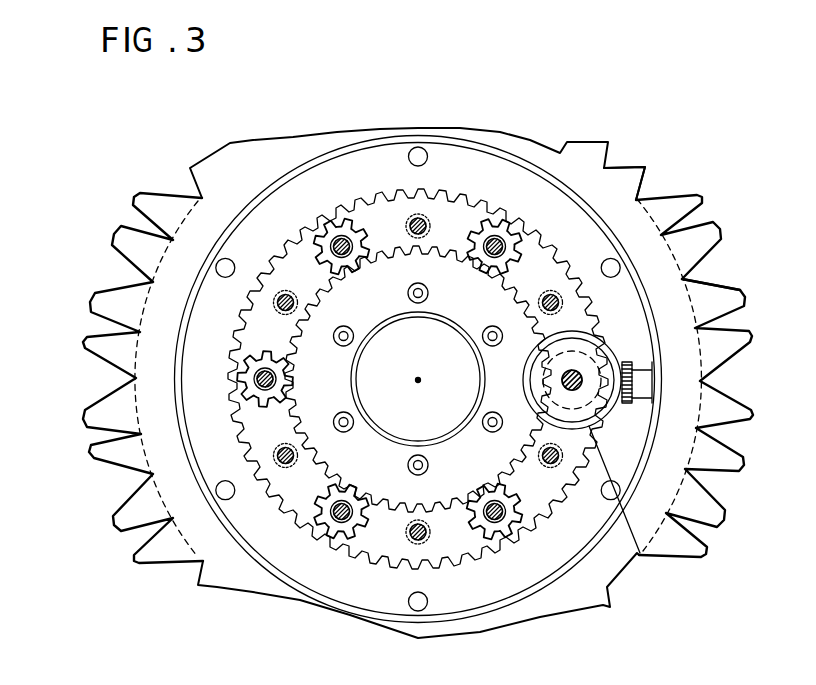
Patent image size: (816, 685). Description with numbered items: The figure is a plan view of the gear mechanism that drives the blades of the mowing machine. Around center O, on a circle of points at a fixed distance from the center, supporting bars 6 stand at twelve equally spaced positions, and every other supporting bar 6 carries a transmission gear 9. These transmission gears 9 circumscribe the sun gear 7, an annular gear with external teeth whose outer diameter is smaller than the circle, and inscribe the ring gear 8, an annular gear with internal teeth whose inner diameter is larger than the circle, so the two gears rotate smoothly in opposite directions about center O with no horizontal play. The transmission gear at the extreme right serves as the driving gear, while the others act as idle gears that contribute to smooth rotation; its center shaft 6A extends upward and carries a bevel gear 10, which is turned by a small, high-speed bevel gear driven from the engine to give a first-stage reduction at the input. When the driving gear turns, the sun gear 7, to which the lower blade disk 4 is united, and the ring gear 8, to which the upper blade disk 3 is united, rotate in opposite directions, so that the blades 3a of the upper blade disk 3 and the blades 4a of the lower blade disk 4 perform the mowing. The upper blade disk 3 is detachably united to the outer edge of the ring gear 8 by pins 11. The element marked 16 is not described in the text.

The upper blade disk 3 is at (621, 195).
The blades of upper blade disk 3a is at (707, 220).
The lower blade disk 4 is at (603, 138).
The blades of lower blade disk 4a is at (690, 192).
The supporting bars 6 is at (412, 220).
The center shaft 6A is at (583, 388).
The sun gear 7 is at (387, 309).
The ring gear 8 is at (205, 380).
The transmission gears 9 is at (490, 235).
The bevel gear 10 is at (636, 360).
The pins 11 is at (420, 147).
The bearing 16 is at (410, 218).